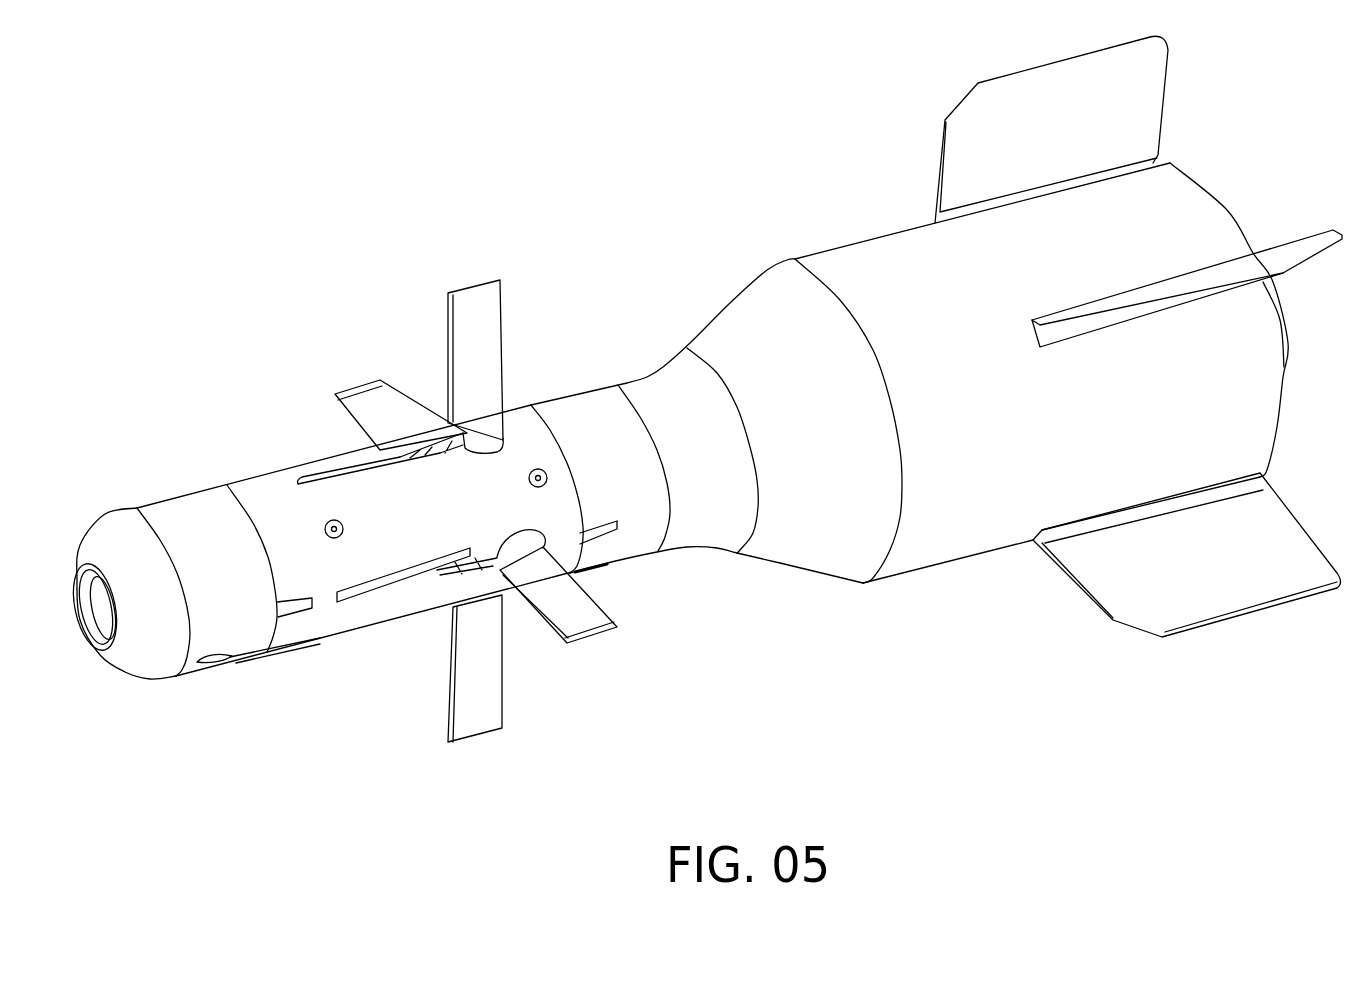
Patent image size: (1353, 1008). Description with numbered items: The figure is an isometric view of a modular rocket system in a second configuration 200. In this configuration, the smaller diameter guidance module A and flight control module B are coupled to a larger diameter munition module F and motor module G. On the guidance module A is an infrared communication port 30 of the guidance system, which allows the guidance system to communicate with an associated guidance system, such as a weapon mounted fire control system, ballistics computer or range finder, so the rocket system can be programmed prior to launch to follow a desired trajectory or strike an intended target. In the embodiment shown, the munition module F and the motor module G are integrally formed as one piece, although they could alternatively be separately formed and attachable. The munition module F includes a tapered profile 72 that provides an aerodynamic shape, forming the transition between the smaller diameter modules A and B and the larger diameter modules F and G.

The second configuration 200 is at (246, 170).
The guidance module A is at (150, 477).
The flight control module B is at (262, 448).
The munition module F is at (733, 273).
The motor module G is at (857, 208).
The infrared communication port 30 is at (202, 663).
The tapered profile 72 is at (863, 600).